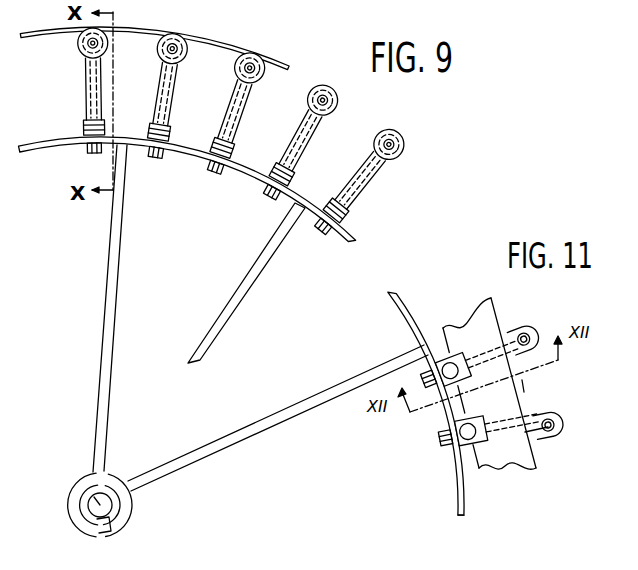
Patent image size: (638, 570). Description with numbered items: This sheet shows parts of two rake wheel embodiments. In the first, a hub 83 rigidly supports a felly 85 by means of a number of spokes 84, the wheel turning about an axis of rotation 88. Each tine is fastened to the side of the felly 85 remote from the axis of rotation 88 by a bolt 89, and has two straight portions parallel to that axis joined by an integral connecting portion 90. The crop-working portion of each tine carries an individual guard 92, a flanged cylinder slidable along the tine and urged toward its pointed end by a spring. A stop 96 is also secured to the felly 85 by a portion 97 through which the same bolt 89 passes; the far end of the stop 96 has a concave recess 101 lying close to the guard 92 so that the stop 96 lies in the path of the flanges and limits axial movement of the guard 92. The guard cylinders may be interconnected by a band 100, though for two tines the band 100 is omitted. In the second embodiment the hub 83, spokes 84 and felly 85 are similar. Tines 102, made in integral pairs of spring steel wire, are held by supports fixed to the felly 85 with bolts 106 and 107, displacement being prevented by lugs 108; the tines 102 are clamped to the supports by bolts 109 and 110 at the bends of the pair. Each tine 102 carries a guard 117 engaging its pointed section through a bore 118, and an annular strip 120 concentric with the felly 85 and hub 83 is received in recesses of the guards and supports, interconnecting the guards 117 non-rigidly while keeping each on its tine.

In FIG. 9, the hub 83 is at (80, 504).
In FIG. 9, the spokes 84 is at (104, 335).
In FIG. 9, the felly 85 is at (58, 147).
In FIG. 11, the felly 85 is at (396, 307).
In FIG. 9, the axis of rotation 88 is at (104, 525).
In FIG. 9, the bolt 89 is at (268, 196).
In FIG. 9, the connecting portion 90 is at (162, 98).
In FIG. 9, the guard 92 is at (313, 91).
In FIG. 9, the stop 96 is at (230, 100).
In FIG. 9, the portion 97 is at (85, 127).
In FIG. 9, the band 100 is at (233, 58).
In FIG. 9, the concave recess 101 is at (160, 53).
In FIG. 11, the tines 102 is at (487, 350).
In FIG. 11, the bolt 106 is at (440, 440).
In FIG. 11, the bolt 107 is at (427, 380).
In FIG. 11, the lugs 108 is at (452, 455).
In FIG. 11, the bolt 109 is at (470, 418).
In FIG. 11, the bolt 110 is at (463, 378).
In FIG. 11, the guard 117 is at (560, 420).
In FIG. 11, the bore 118 is at (555, 432).
In FIG. 11, the annular strip 120 is at (524, 388).